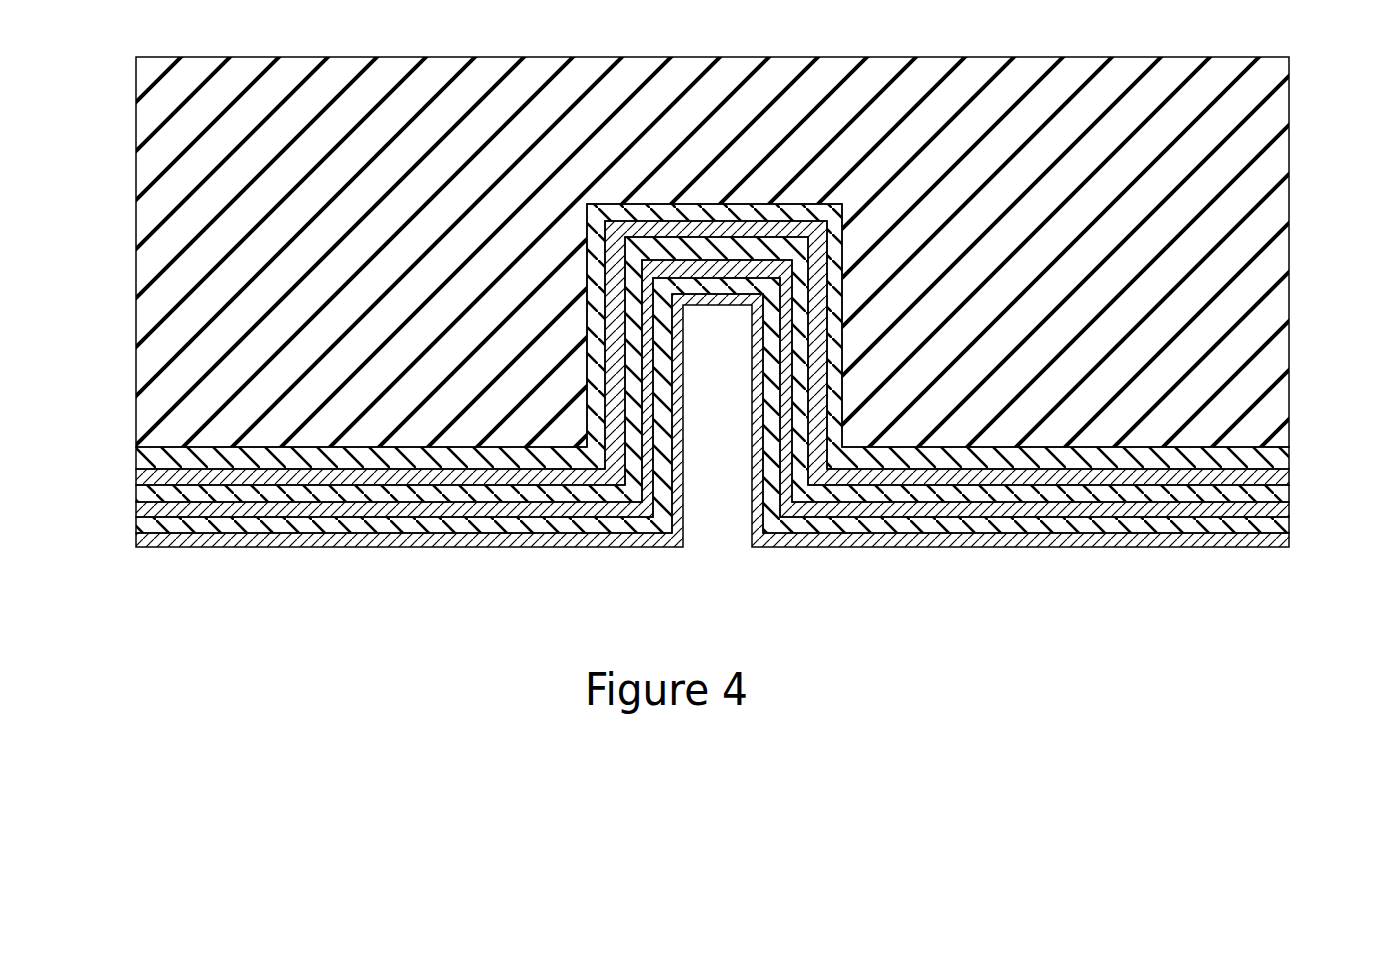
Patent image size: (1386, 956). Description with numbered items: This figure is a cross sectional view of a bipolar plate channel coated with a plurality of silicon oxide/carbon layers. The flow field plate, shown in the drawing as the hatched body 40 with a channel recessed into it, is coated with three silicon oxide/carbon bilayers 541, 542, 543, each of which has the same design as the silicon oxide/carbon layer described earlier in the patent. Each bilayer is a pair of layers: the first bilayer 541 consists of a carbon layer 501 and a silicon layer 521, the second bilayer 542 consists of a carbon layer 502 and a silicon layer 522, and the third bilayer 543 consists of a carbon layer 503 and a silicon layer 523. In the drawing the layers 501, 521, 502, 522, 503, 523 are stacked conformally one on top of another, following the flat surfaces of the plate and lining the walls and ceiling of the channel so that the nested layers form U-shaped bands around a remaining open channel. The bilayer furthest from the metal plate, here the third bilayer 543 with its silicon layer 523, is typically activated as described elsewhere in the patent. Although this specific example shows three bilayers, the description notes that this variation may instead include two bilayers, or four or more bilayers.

The carbon layer 501 is at (143, 457).
The silicon layer 521 is at (687, 354).
The carbon layer 502 is at (145, 493).
The silicon layer 522 is at (687, 391).
The carbon layer 503 is at (140, 526).
The silicon layer 523 is at (685, 425).
The silicon oxide/carbon bilayer 541 is at (718, 346).
The silicon oxide/carbon bilayer 542 is at (718, 380).
The silicon oxide/carbon bilayer 543 is at (717, 417).
The substrate with trench 40 is at (712, 252).